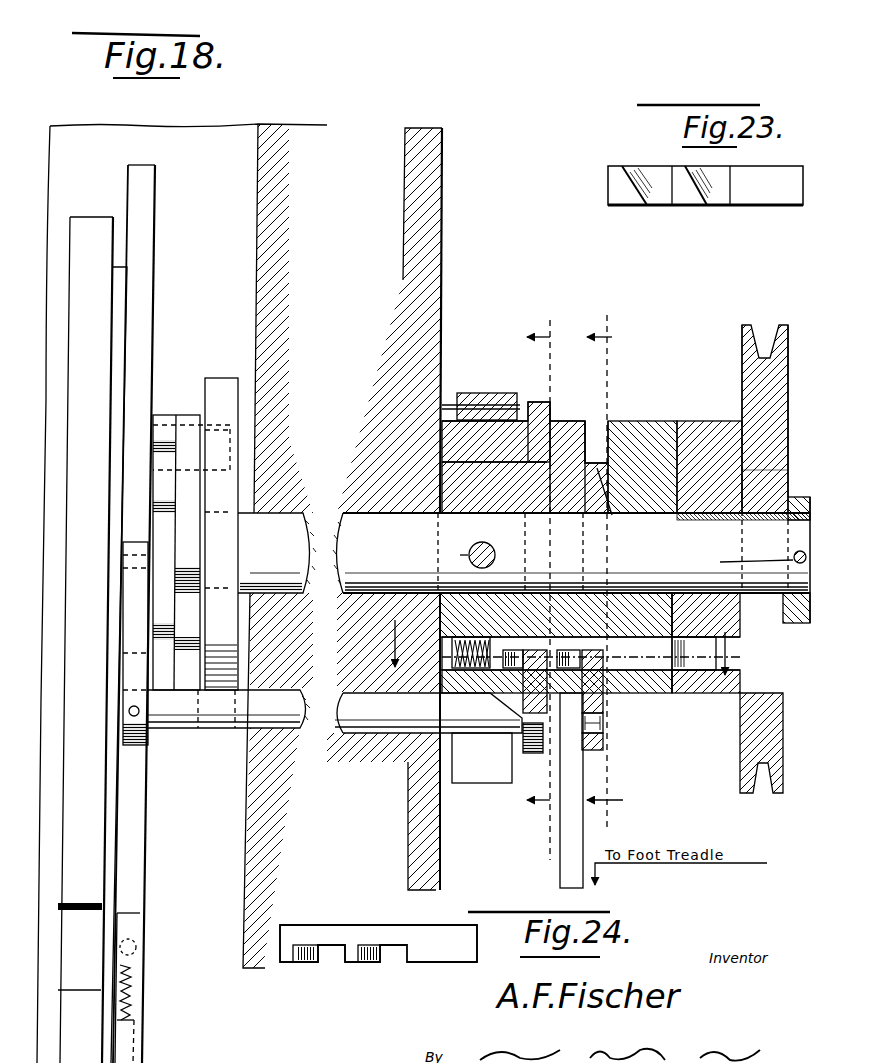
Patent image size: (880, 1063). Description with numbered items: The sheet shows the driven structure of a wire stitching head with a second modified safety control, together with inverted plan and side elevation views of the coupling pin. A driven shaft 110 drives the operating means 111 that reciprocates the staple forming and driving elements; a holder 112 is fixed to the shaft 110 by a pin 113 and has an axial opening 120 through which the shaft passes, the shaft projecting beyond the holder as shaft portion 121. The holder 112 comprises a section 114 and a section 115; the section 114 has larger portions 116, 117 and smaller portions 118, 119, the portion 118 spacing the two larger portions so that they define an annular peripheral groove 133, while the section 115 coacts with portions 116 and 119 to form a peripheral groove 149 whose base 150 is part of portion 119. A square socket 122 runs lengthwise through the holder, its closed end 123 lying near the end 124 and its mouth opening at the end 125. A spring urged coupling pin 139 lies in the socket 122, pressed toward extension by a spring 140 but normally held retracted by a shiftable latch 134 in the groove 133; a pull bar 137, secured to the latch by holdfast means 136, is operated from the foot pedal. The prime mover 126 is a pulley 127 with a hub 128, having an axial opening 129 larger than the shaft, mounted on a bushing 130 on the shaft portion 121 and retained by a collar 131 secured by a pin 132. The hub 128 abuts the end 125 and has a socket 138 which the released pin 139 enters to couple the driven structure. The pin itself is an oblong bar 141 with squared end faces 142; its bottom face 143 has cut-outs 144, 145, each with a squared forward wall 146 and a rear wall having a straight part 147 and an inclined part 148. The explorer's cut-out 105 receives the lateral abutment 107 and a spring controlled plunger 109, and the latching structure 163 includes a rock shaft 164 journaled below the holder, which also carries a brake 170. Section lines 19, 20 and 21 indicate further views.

In FIG. 18, the section line 19 is at (550, 330).
In FIG. 18, the section line 20 is at (607, 325).
In FIG. 18, the section line 21 is at (430, 652).
In FIG. 18, the cut-out 105 is at (145, 1043).
In FIG. 18, the lateral abutment 107 is at (140, 950).
In FIG. 18, the spring controlled plunger 109 is at (130, 916).
In FIG. 18, the driven shaft 110 is at (360, 537).
In FIG. 18, the operating means 111 is at (223, 387).
In FIG. 18, the holder 112 is at (637, 433).
In FIG. 18, the pin 113 is at (468, 553).
In FIG. 18, the section 114 is at (500, 437).
In FIG. 18, the section 115 is at (535, 425).
In FIG. 18, the portion 116 is at (578, 437).
In FIG. 18, the portion 117 is at (660, 430).
In FIG. 18, the portion 118 is at (604, 497).
In FIG. 18, the portion 119 is at (495, 455).
In FIG. 18, the axial opening 120 is at (480, 517).
In FIG. 18, the shaft portion 121 is at (720, 562).
In FIG. 18, the square socket 122 is at (455, 638).
In FIG. 18, the closed end 123 is at (385, 740).
In FIG. 18, the end 124 is at (456, 393).
In FIG. 18, the end 125 is at (683, 440).
In FIG. 18, the prime mover 126 is at (793, 368).
In FIG. 18, the pulley 127 is at (770, 440).
In FIG. 18, the hub 128 is at (723, 470).
In FIG. 18, the axial opening 129 is at (775, 488).
In FIG. 18, the bushing 130 is at (773, 520).
In FIG. 18, the collar 131 is at (805, 625).
In FIG. 18, the pin 132 is at (700, 518).
In FIG. 18, the annular peripheral groove 133 is at (597, 440).
In FIG. 18, the shiftable latch 134 is at (605, 702).
In FIG. 18, the holdfast means 136 is at (582, 723).
In FIG. 18, the pull bar 137 is at (558, 858).
In FIG. 18, the socket 138 is at (702, 665).
In FIG. 18, the coupling pin 139 is at (643, 640).
In FIG. 23, the coupling pin 139 is at (612, 188).
In FIG. 24, the coupling pin 139 is at (437, 935).
In FIG. 18, the spring 140 is at (438, 660).
In FIG. 24, the oblong bar 141 is at (441, 957).
In FIG. 24, the squared end faces 142 is at (281, 932).
In FIG. 24, the bottom face 143 is at (407, 970).
In FIG. 23, the cut-out 144 is at (652, 178).
In FIG. 24, the cut-out 144 is at (318, 957).
In FIG. 23, the cut-out 145 is at (718, 190).
In FIG. 24, the cut-out 145 is at (388, 955).
In FIG. 23, the squared forward wall 146 is at (733, 190).
In FIG. 23, the straight part 147 is at (700, 206).
In FIG. 23, the inclined part 148 is at (685, 203).
In FIG. 24, the inclined part 148 is at (305, 965).
In FIG. 18, the peripheral groove 149 is at (557, 415).
In FIG. 18, the base 150 is at (539, 467).
In FIG. 18, the shiftable latching structure 163 is at (250, 712).
In FIG. 18, the rock shaft 164 is at (192, 716).
In FIG. 18, the brake 170 is at (463, 478).